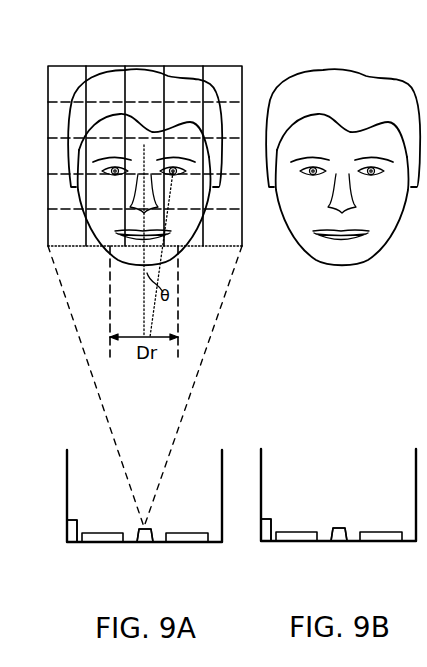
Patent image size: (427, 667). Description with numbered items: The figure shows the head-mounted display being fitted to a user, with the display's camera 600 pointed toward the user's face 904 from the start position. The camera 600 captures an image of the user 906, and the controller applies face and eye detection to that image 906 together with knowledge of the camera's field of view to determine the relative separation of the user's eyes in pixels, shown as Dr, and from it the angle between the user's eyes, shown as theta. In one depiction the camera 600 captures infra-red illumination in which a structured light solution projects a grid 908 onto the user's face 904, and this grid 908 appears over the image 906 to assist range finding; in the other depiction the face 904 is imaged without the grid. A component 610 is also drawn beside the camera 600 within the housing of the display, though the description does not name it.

In FIG. 9A, the face of user 904 is at (122, 270).
In FIG. 9A, the bounding box 906 is at (220, 65).
In FIG. 9A, the grid lines 908 is at (87, 75).
In FIG. 9A, the camera 600 is at (145, 543).
In FIG. 9B, the camera 600 is at (337, 542).
In FIG. 9A, the sensor 610 is at (72, 543).
In FIG. 9B, the sensor 610 is at (265, 542).